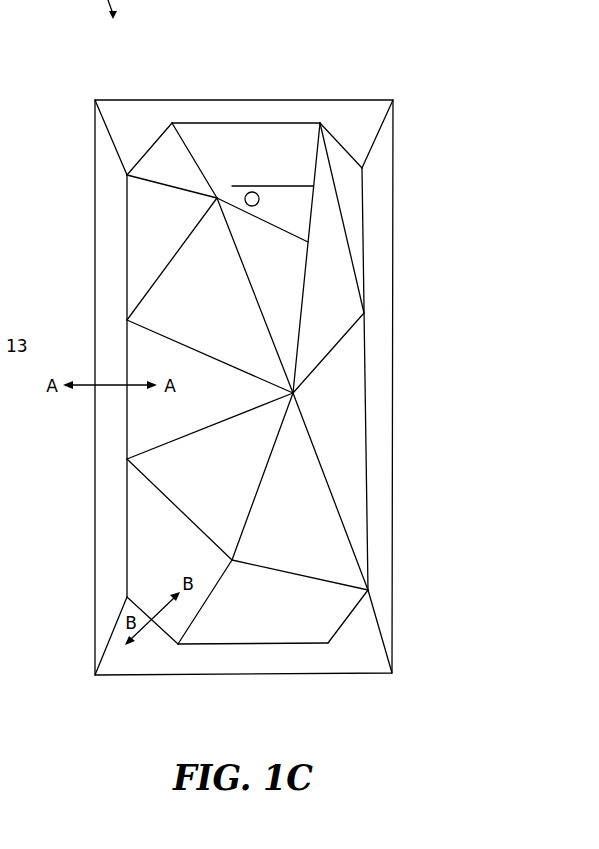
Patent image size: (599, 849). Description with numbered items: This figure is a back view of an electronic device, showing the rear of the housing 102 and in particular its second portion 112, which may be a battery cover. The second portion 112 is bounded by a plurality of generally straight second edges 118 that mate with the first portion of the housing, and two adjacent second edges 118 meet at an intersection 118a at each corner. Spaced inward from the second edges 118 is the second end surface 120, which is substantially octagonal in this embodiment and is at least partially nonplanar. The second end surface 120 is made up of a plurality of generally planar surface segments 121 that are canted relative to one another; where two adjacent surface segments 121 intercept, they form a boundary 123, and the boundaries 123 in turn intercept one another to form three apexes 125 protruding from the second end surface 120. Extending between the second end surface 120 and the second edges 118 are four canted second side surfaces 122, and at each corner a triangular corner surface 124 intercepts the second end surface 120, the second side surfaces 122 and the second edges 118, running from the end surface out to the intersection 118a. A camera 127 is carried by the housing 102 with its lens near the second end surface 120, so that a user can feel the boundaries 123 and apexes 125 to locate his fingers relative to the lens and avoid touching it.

The housing 102 is at (410, 608).
The second portion 112 is at (414, 158).
The second edges 118 is at (212, 100).
The intersection 118a is at (95, 100).
The second end surface 120 is at (370, 507).
The surface segments 121 is at (350, 221).
The second side surfaces 122 is at (275, 117).
The boundaries 123 is at (338, 194).
The corner surfaces 124 is at (133, 128).
The apex 125 is at (217, 198).
The camera 127 is at (259, 194).